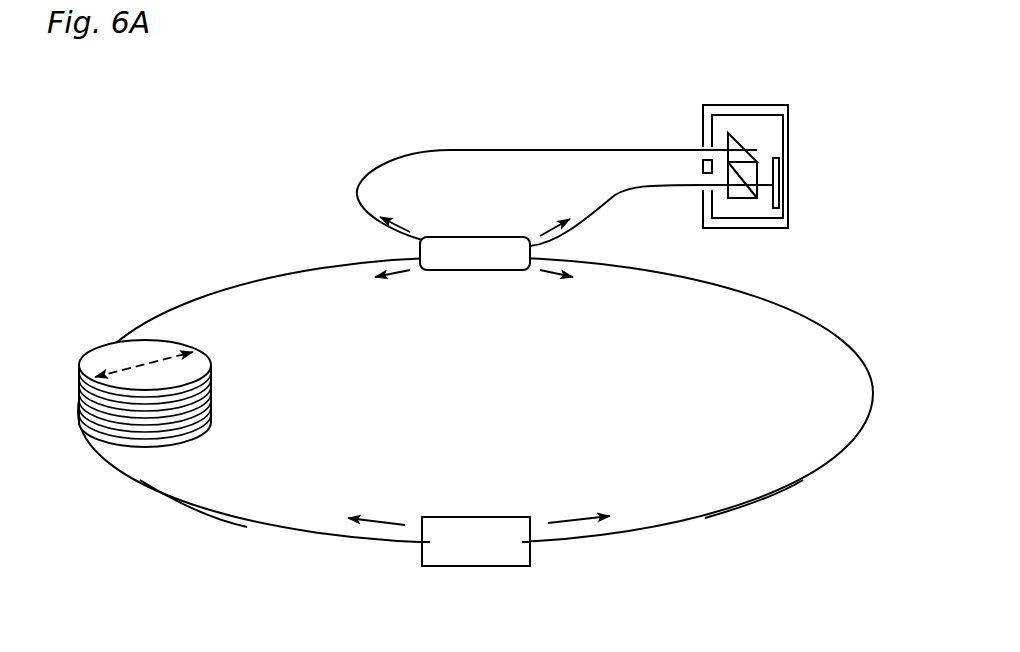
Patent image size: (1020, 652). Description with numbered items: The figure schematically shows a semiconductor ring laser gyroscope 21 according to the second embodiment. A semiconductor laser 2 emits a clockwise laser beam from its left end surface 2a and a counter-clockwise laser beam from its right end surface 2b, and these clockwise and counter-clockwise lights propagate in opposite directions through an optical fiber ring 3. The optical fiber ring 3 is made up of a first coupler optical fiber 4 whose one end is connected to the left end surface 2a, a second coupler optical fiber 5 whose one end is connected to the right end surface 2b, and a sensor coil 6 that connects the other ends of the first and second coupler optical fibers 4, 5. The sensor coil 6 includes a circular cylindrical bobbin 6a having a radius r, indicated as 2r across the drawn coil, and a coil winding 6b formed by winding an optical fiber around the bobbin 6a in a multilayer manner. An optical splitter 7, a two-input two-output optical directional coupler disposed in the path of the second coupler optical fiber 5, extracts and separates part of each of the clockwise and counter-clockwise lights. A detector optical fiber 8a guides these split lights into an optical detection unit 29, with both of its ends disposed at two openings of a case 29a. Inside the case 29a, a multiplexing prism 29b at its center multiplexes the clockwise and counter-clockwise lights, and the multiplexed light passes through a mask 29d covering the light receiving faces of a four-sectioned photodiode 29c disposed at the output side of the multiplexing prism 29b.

The semiconductor ring laser gyroscope 21 is at (230, 145).
The semiconductor laser 2 is at (477, 521).
The left end surface 2a is at (420, 555).
The right end surface 2b is at (530, 556).
The coil radius 2r is at (157, 362).
The optical fiber ring 3 is at (790, 458).
The first coupler optical fiber 4 is at (243, 518).
The second coupler optical fiber 5 is at (705, 518).
The sensor coil 6 is at (206, 372).
The bobbin 6a is at (133, 350).
The coil winding 6b is at (188, 420).
The optical splitter 7 is at (493, 270).
The detector optical fiber 8a is at (500, 150).
The optical detection unit 29 is at (787, 147).
The case 29a is at (788, 128).
The multiplexing prism 29b is at (732, 141).
The four-sectioned photodiode 29c is at (782, 180).
The mask 29d is at (768, 196).